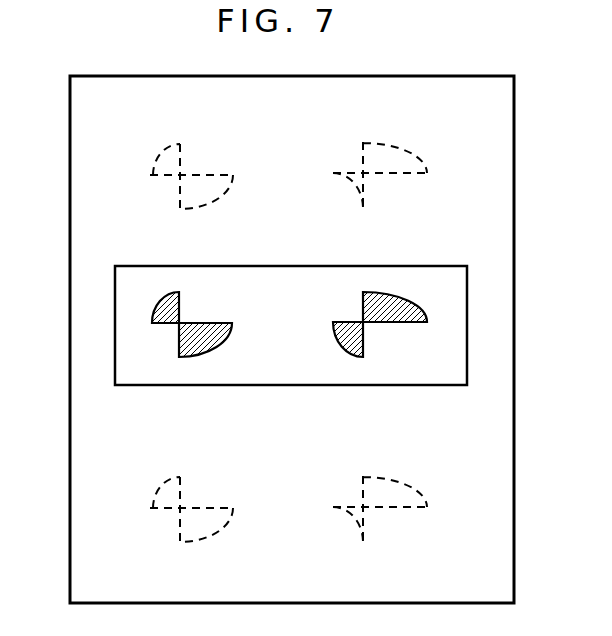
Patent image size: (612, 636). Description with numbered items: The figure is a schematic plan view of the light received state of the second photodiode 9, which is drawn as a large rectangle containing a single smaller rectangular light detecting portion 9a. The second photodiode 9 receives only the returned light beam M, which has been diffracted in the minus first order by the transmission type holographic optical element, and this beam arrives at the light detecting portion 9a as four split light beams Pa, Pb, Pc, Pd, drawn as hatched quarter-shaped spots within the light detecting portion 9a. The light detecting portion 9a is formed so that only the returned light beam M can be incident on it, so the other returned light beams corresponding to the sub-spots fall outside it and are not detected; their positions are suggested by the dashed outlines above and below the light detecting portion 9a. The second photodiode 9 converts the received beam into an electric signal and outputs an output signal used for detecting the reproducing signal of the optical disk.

The second photodiode 9 is at (517, 190).
The light detecting portion 9a is at (457, 297).
The split light beam Pa is at (205, 342).
The split light beam Pb is at (393, 298).
The split light beam Pc is at (165, 303).
The split light beam Pd is at (345, 343).